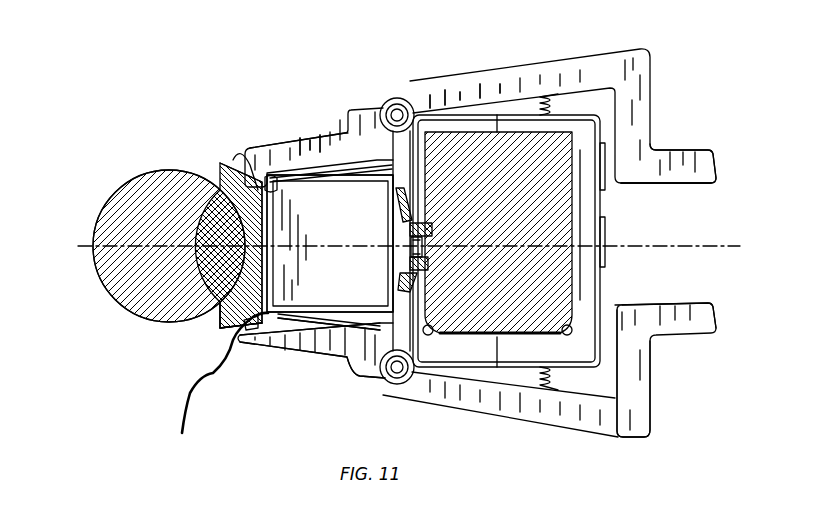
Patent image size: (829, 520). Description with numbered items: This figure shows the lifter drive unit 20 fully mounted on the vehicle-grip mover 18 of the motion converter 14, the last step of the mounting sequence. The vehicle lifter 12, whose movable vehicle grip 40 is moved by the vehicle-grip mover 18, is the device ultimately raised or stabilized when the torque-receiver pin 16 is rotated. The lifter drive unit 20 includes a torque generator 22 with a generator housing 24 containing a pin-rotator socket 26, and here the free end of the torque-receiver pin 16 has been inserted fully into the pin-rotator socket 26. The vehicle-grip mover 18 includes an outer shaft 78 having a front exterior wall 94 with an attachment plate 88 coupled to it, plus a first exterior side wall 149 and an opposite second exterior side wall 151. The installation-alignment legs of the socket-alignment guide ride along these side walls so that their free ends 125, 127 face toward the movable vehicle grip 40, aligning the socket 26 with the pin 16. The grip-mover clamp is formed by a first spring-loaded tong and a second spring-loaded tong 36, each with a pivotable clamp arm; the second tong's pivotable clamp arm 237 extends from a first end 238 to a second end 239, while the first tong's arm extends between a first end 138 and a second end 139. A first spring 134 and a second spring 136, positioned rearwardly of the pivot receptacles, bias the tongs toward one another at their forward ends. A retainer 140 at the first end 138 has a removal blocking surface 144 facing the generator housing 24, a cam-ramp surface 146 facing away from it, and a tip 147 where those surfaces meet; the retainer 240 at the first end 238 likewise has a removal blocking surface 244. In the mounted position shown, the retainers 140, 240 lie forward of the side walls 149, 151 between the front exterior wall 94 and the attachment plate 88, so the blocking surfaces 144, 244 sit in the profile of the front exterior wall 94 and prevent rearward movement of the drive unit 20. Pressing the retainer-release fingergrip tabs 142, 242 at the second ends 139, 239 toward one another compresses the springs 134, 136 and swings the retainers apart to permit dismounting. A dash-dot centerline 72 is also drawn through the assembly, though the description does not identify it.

The vehicle lifter 12 is at (105, 196).
The movable vehicle grip 40 is at (133, 170).
The motion converter 14 is at (267, 320).
The torque-receiver pin 16 is at (407, 256).
The vehicle-grip mover 18 is at (290, 318).
The lifter drive unit 20 is at (655, 110).
The torque generator 22 is at (455, 112).
The generator housing 24 is at (452, 344).
The pin-rotator socket 26 is at (415, 218).
The second spring-loaded tong 36 is at (584, 424).
The central axis 72 is at (727, 245).
The outer shaft 78 is at (183, 382).
The attachment plate 88 is at (213, 324).
The front exterior wall 94 is at (247, 328).
The free end 125 is at (306, 150).
The free end 127 is at (303, 318).
The first spring 134 is at (550, 93).
The second spring 136 is at (556, 390).
The first end 138 is at (294, 134).
The second end 139 is at (716, 156).
The retainer 140 is at (261, 107).
The retainer-release fingergrip tab 142 is at (660, 184).
The removal blocking surface 144 is at (268, 177).
The cam-ramp surface 146 is at (258, 193).
The tip 147 is at (250, 186).
The first exterior side wall 149 is at (340, 170).
The second exterior side wall 151 is at (330, 318).
The pivotable clamp arm 237 is at (648, 0).
The first end 238 is at (264, 346).
The second end 239 is at (713, 336).
The retainer 240 is at (218, 383).
The retainer-release fingergrip tab 242 is at (668, 306).
The removal blocking surface 244 is at (263, 320).